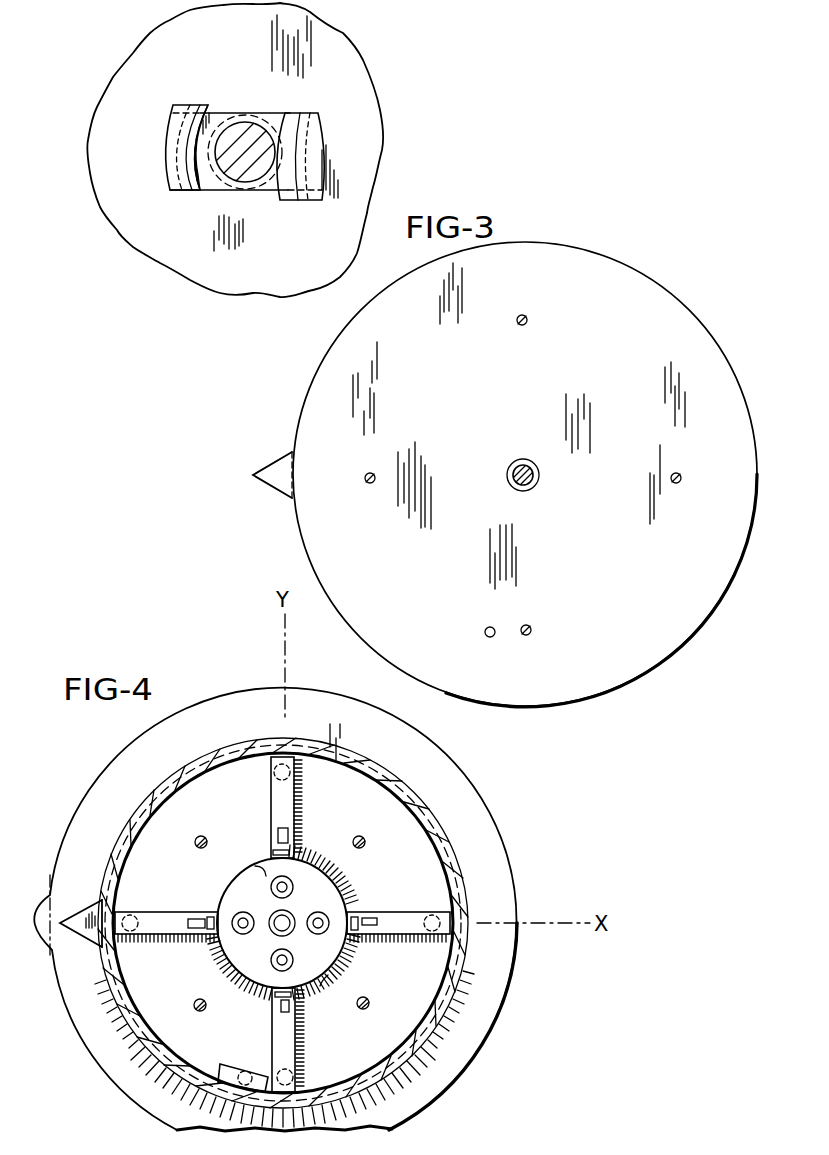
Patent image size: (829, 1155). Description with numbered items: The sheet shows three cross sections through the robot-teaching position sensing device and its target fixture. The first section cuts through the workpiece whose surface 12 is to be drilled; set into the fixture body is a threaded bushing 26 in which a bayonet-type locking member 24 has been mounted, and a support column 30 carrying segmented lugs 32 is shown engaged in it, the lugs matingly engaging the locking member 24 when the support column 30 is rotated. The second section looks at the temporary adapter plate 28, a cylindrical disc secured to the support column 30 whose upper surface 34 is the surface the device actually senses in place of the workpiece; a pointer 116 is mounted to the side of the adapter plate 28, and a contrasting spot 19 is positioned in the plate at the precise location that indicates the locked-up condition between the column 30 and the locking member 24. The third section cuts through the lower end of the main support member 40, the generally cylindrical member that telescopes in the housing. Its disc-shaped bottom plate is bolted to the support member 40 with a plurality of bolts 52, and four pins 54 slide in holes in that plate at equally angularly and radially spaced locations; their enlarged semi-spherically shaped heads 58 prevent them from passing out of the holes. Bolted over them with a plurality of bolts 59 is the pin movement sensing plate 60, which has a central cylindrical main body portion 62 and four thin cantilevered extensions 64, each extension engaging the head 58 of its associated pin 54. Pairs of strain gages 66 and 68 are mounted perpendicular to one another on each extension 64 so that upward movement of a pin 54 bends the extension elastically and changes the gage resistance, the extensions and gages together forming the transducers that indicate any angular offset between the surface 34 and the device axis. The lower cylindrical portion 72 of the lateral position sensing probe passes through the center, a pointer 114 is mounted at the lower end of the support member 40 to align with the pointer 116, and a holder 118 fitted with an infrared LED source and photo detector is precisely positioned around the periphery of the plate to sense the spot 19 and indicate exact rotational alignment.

In FIG. 2, the surface 12 is at (189, 75).
In FIG. 2, the bayonet-type locking member 24 is at (165, 140).
In FIG. 2, the threaded bushing 26 is at (227, 190).
In FIG. 2, the support column 30 is at (243, 130).
In FIG. 2, the segmented lugs 32 is at (283, 120).
In FIG. 3, the spot 19 is at (485, 630).
In FIG. 3, the adapter plate 28 is at (652, 668).
In FIG. 3, the upper surface 34 is at (608, 557).
In FIG. 4, the upper surface 34 is at (490, 852).
In FIG. 3, the pins 54 is at (374, 474).
In FIG. 3, the cylindrical portion 72 is at (541, 478).
In FIG. 4, the cylindrical portion 72 is at (281, 936).
In FIG. 3, the pointer 116 is at (272, 468).
In FIG. 4, the pointer 116 is at (66, 903).
In FIG. 4, the pointer 114 is at (82, 937).
In FIG. 4, the main support member 40 is at (448, 987).
In FIG. 4, the bolts 52 is at (206, 836).
In FIG. 4, the semi-spherically shaped heads 58 is at (291, 770).
In FIG. 4, the bolts 59 is at (243, 912).
In FIG. 4, the pin movement sensing plate 60 is at (241, 990).
In FIG. 4, the central cylindrical main body portion 62 is at (272, 858).
In FIG. 4, the cantilevered extensions 64 is at (271, 800).
In FIG. 4, the strain gage 66 is at (197, 918).
In FIG. 4, the strain gage 68 is at (255, 866).
In FIG. 4, the holder 118 is at (222, 1065).